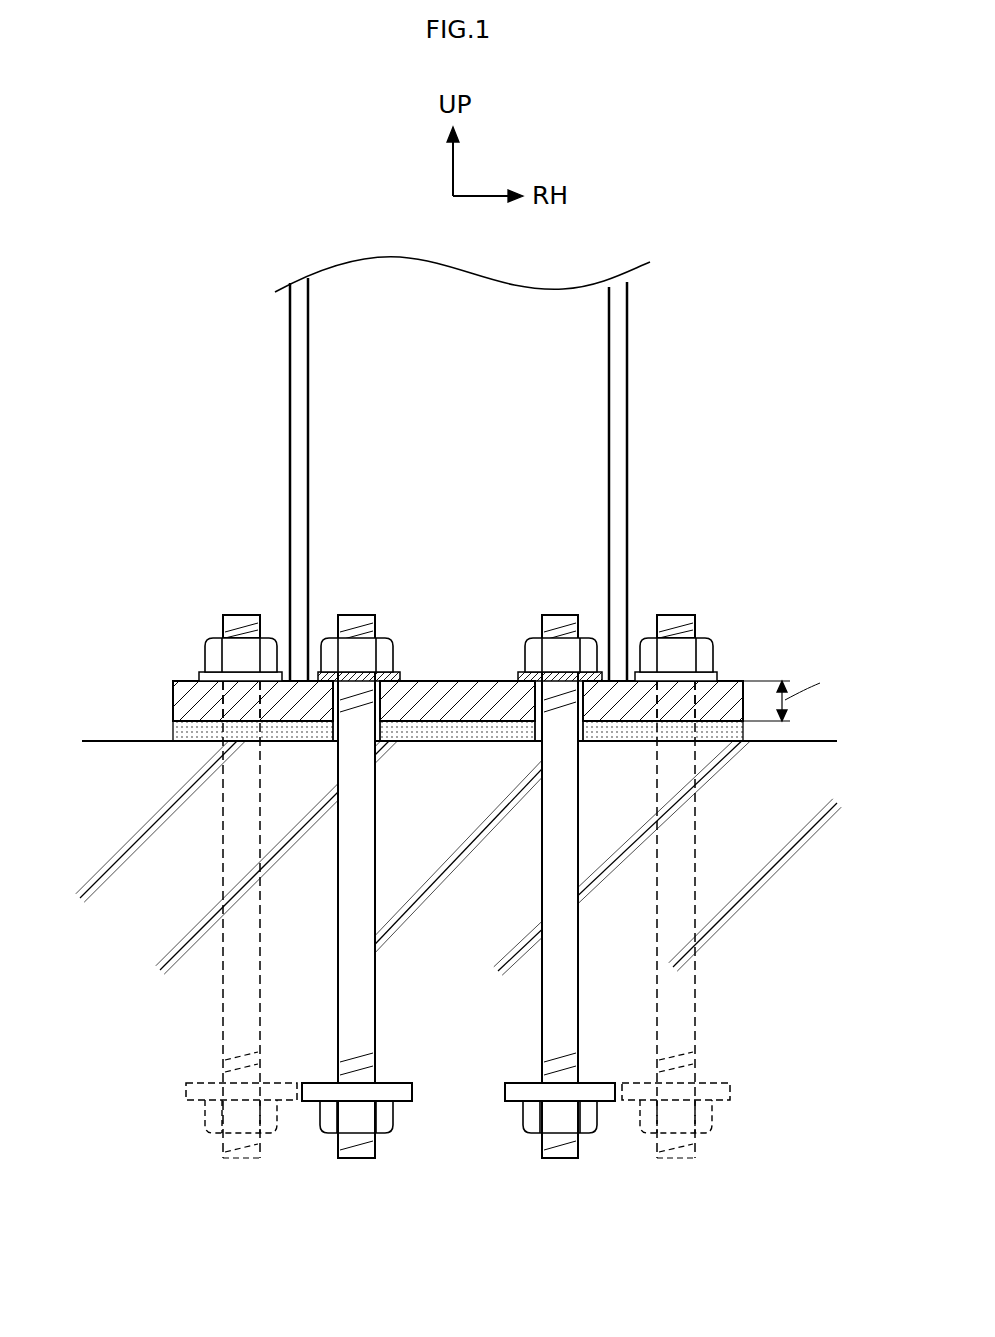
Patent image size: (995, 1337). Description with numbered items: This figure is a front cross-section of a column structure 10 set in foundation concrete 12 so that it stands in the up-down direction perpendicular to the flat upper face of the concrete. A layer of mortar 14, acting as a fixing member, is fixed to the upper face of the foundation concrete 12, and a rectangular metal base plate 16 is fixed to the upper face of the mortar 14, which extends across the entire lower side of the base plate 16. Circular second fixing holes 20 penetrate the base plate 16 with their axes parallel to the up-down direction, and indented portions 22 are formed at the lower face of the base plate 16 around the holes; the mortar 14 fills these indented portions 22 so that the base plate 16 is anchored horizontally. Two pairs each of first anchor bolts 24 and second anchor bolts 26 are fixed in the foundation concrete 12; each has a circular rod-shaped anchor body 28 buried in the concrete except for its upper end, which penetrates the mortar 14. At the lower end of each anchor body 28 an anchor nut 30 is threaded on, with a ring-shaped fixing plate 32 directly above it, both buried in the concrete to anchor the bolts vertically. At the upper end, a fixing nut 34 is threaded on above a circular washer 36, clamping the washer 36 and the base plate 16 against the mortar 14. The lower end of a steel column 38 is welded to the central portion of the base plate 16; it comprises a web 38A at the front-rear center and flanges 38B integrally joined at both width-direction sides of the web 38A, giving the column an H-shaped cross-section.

The column structure 10 is at (253, 203).
The foundation concrete 12 is at (93, 740).
The mortar 14 is at (435, 743).
The base plate 16 is at (455, 681).
The second fixing hole 20 is at (385, 692).
The indented portion 22 is at (327, 742).
The first anchor bolt 24 is at (242, 612).
The second anchor bolt 26 is at (363, 612).
The anchor body 28 is at (222, 868).
The anchor nut 30 is at (205, 1115).
The fixing plate 32 is at (186, 1090).
The fixing nut 34 is at (212, 638).
The washer 36 is at (199, 675).
The steel column 38 is at (460, 469).
The web 38A is at (585, 356).
The flange 38B is at (298, 472).